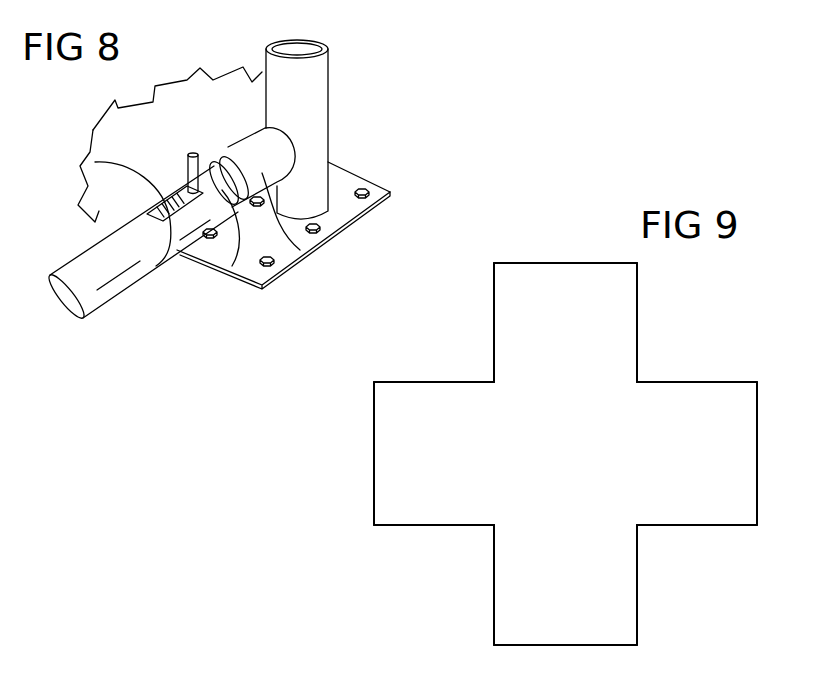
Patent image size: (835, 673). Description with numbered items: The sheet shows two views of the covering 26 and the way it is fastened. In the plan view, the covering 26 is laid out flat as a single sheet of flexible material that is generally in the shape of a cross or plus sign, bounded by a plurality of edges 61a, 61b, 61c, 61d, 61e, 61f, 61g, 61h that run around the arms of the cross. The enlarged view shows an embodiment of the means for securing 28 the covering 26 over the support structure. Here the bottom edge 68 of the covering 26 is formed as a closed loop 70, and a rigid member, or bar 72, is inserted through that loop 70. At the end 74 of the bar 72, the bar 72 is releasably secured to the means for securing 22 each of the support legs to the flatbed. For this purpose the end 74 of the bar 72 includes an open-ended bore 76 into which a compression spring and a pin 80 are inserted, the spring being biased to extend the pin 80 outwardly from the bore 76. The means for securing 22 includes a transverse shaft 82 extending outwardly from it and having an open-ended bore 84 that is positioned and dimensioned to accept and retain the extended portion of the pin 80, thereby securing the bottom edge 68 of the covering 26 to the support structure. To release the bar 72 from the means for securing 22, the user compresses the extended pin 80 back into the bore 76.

In FIG. 8, the means for securing the support legs to the flatbed 22 is at (262, 81).
In FIG. 8, the covering 26 is at (93, 130).
In FIG. 9, the covering 26 is at (491, 229).
In FIG. 8, the means for securing the covering 28 is at (378, 86).
In FIG. 9, the edge 61a is at (406, 525).
In FIG. 9, the edge 61b is at (403, 382).
In FIG. 9, the edge 61c is at (494, 315).
In FIG. 9, the edge 61d is at (637, 305).
In FIG. 9, the edge 61e is at (709, 382).
In FIG. 9, the edge 61f is at (730, 525).
In FIG. 9, the edge 61g is at (637, 607).
In FIG. 9, the edge 61h is at (494, 587).
In FIG. 8, the bottom edge 68 is at (90, 258).
In FIG. 8, the closed loop 70 is at (97, 291).
In FIG. 8, the bar 72 is at (128, 206).
In FIG. 8, the end of the bar 74 is at (190, 236).
In FIG. 8, the open-ended bore 76 is at (188, 79).
In FIG. 8, the pin 80 is at (92, 162).
In FIG. 8, the transverse shaft 82 is at (300, 250).
In FIG. 8, the open-ended bore 84 is at (268, 266).